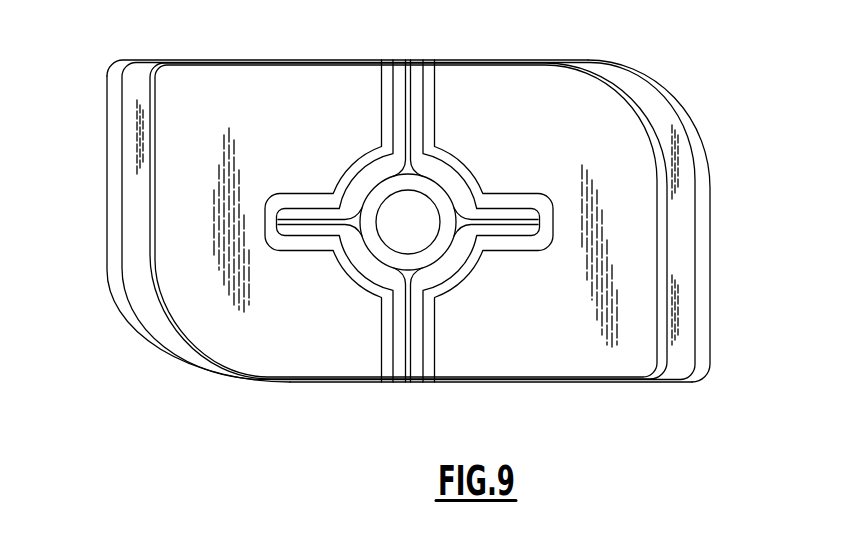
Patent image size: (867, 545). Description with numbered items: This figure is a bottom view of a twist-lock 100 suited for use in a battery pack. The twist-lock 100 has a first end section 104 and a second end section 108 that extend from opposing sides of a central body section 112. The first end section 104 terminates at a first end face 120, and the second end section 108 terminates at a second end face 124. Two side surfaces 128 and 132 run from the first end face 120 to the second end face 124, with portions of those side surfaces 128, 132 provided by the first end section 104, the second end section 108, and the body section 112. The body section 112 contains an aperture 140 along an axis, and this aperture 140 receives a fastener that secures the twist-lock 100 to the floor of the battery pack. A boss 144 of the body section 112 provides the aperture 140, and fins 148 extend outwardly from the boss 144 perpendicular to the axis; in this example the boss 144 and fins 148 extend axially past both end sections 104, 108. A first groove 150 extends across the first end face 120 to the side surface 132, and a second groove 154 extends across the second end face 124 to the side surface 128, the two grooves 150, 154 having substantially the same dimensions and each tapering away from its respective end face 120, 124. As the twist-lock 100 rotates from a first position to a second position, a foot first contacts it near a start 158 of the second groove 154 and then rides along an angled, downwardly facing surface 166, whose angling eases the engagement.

The twist-lock 100 is at (720, 84).
The first end section 104 is at (158, 393).
The second end section 108 is at (647, 413).
The body section 112 is at (408, 430).
The first end face 120 is at (110, 268).
The second end face 124 is at (697, 243).
The side surface 128 is at (349, 60).
The side surface 132 is at (343, 383).
The aperture 140 is at (414, 226).
The boss 144 is at (455, 182).
The fins 148 is at (527, 213).
The first groove 150 is at (157, 328).
The second groove 154 is at (678, 315).
The start of the groove 158 is at (582, 67).
The downwardly facing surface 166 is at (680, 188).